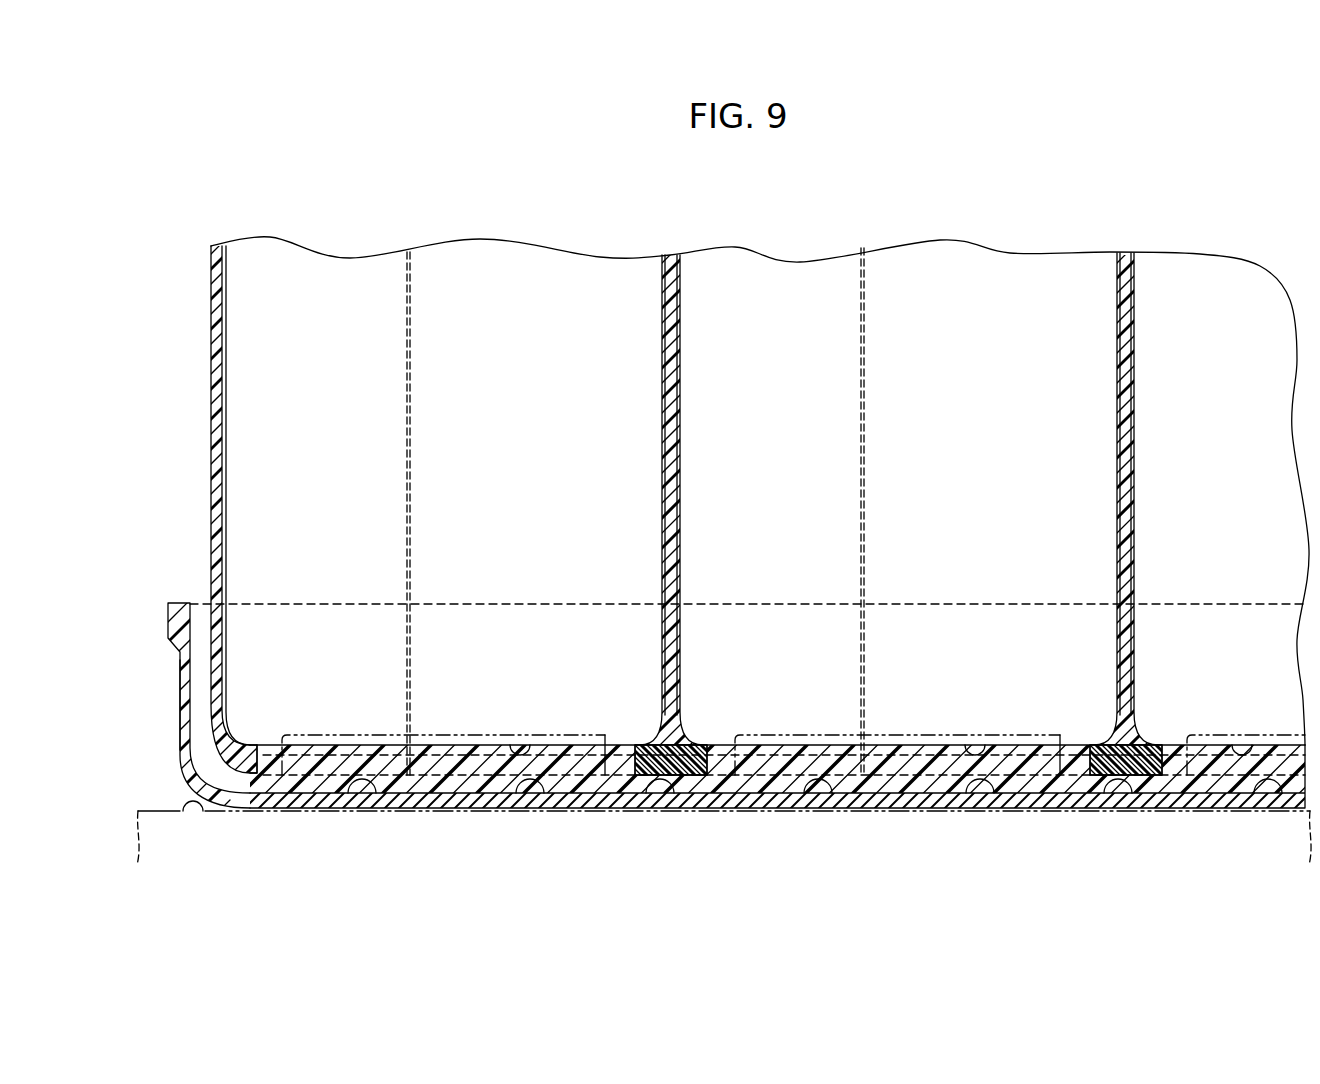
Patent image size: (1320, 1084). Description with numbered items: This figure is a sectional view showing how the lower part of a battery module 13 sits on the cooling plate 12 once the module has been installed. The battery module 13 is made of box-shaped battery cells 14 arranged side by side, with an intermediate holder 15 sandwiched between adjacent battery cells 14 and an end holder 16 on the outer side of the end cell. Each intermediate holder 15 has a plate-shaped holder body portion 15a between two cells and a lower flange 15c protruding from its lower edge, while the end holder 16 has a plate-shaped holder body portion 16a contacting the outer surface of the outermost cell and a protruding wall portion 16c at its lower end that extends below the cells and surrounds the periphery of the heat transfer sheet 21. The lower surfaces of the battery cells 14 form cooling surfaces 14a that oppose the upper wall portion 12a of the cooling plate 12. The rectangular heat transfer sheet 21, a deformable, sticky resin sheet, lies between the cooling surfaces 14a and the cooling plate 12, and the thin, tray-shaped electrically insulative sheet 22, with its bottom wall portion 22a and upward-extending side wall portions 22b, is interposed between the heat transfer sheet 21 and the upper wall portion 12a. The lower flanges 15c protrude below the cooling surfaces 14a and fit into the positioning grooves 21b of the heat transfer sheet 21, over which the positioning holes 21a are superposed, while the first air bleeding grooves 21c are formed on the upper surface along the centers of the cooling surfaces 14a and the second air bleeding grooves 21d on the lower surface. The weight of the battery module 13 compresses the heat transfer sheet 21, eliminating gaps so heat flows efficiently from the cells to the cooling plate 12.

The cooling plate 12 is at (158, 800).
The upper wall portion 12a is at (190, 818).
The battery module 13 is at (1046, 226).
The battery cell 14 is at (368, 283).
The cooling surface 14a is at (520, 746).
The intermediate holder 15 is at (700, 371).
The holder body portion 15a is at (668, 446).
The lower flange 15c is at (695, 745).
The end holder 16 is at (195, 357).
The holder body portion 16a is at (216, 438).
The protruding wall portion 16c is at (240, 758).
The heat transfer sheet 21 is at (822, 735).
The positioning hole 21a is at (662, 805).
The positioning groove 21b is at (606, 735).
The first air bleeding groove 21c is at (444, 742).
The second air bleeding groove 21d is at (362, 812).
The electrically insulative sheet 22 is at (158, 618).
The bottom wall portion 22a is at (880, 810).
The side wall portion 22b is at (182, 683).